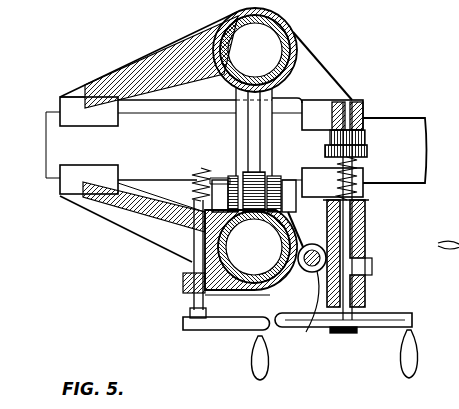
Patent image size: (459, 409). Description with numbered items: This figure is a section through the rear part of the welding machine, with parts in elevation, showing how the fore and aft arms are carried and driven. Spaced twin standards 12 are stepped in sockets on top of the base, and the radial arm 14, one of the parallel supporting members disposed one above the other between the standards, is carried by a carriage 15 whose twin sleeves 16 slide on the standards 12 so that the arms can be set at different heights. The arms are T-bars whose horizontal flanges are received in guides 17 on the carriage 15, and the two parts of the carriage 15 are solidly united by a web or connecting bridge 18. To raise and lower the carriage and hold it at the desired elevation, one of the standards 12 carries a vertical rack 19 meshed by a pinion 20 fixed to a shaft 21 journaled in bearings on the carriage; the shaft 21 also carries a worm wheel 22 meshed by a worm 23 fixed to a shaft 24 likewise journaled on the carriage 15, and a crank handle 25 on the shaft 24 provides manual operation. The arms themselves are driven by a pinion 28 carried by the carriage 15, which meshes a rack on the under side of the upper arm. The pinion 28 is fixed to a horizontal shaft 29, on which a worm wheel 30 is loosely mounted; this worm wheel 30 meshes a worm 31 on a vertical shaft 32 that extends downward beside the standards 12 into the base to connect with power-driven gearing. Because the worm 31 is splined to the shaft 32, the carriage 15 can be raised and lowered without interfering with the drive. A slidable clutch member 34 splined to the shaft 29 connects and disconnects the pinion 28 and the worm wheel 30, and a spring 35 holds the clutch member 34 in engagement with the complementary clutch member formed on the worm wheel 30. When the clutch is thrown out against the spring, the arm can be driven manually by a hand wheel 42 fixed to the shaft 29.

The twin standards 12 is at (290, 37).
The radial arm 14 is at (395, 150).
The carriage 15 is at (332, 93).
The twin sleeves 16 is at (250, 291).
The guides 17 is at (97, 122).
The connecting bridge 18 is at (237, 137).
The vertical rack 19 is at (258, 222).
The pinion 20 is at (243, 175).
The shaft 21 is at (278, 180).
The worm wheel 22 is at (195, 172).
The worm 23 is at (157, 223).
The shaft 24 is at (192, 262).
The crank handle 25 is at (230, 333).
The pinion 28 is at (367, 140).
The horizontal shaft 29 is at (367, 296).
The worm wheel 30 is at (373, 266).
The worm 31 is at (310, 324).
The vertical shaft 32 is at (309, 273).
The slidable clutch member 34 is at (367, 223).
The spring 35 is at (353, 178).
The hand wheel 42 is at (379, 330).